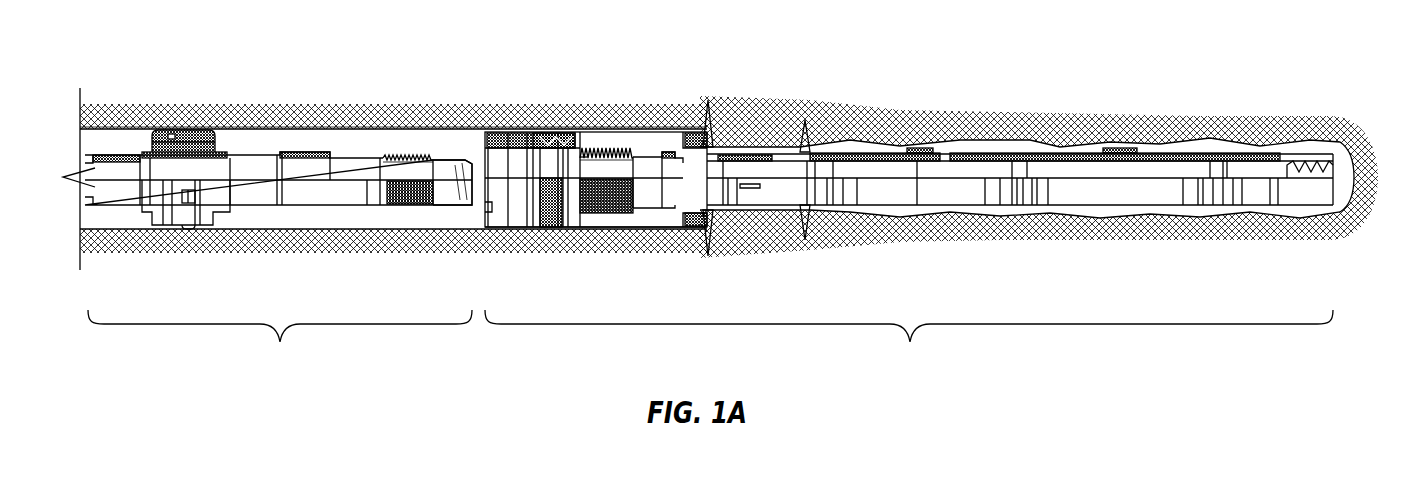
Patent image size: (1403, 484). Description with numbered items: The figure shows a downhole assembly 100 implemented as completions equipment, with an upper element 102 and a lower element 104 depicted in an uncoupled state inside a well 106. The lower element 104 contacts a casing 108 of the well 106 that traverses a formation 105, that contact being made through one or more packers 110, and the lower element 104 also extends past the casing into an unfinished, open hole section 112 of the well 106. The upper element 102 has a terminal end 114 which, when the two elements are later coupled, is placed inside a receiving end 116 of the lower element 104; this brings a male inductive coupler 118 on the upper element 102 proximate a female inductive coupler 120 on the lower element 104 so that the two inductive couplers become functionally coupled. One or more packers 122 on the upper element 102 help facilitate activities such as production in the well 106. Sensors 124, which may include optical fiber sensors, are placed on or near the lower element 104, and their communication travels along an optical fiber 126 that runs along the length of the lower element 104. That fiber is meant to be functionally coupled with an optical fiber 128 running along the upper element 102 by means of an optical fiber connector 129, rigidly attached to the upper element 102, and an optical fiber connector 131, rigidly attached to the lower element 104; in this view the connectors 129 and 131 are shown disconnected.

The downhole assembly 100 is at (1285, 72).
The upper element 102 is at (278, 265).
The lower element 104 is at (909, 266).
The formation 105 is at (447, 104).
The well 106 is at (1030, 140).
The casing 108 is at (250, 128).
The packer 110 is at (555, 135).
The open hole section 112 is at (1043, 238).
The terminal end 114 is at (443, 203).
The receiving end 116 is at (497, 217).
The male inductive coupler 118 is at (397, 203).
The female inductive coupler 120 is at (605, 157).
The packer 122 is at (190, 132).
The sensor 124 is at (918, 148).
The optical fiber 126 is at (665, 152).
The optical fiber 128 is at (123, 157).
The optical fiber connector 129 is at (370, 152).
The optical fiber connector 131 is at (587, 155).